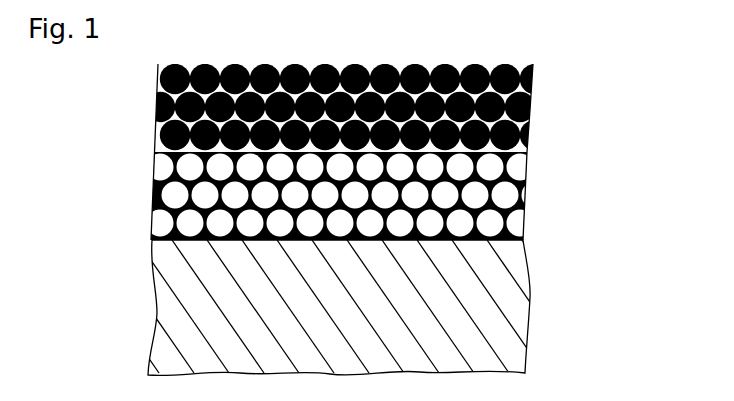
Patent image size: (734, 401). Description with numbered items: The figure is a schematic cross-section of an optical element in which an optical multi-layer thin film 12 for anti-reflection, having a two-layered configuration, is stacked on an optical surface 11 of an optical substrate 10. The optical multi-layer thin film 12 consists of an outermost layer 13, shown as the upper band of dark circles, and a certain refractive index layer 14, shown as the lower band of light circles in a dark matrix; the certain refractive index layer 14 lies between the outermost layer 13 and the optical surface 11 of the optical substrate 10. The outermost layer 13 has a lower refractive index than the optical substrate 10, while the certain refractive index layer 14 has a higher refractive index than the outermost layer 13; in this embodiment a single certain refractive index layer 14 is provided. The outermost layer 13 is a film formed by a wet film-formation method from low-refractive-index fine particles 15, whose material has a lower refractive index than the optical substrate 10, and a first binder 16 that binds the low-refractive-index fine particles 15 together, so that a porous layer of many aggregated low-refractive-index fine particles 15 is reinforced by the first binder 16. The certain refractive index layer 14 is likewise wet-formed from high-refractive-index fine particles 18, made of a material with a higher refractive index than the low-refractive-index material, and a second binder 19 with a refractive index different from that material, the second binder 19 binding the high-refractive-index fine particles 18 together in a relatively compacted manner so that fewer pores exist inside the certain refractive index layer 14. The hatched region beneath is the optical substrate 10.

The optical substrate 10 is at (507, 308).
The optical surface 11 is at (155, 225).
The optical multi-layer thin film 12 is at (348, 154).
The outermost layer 13 is at (320, 107).
The certain refractive index layer 14 is at (320, 198).
The low-refractive-index fine particles 15 is at (154, 113).
The first binder 16 is at (157, 88).
The high-refractive-index fine particles 18 is at (155, 168).
The second binder 19 is at (155, 196).